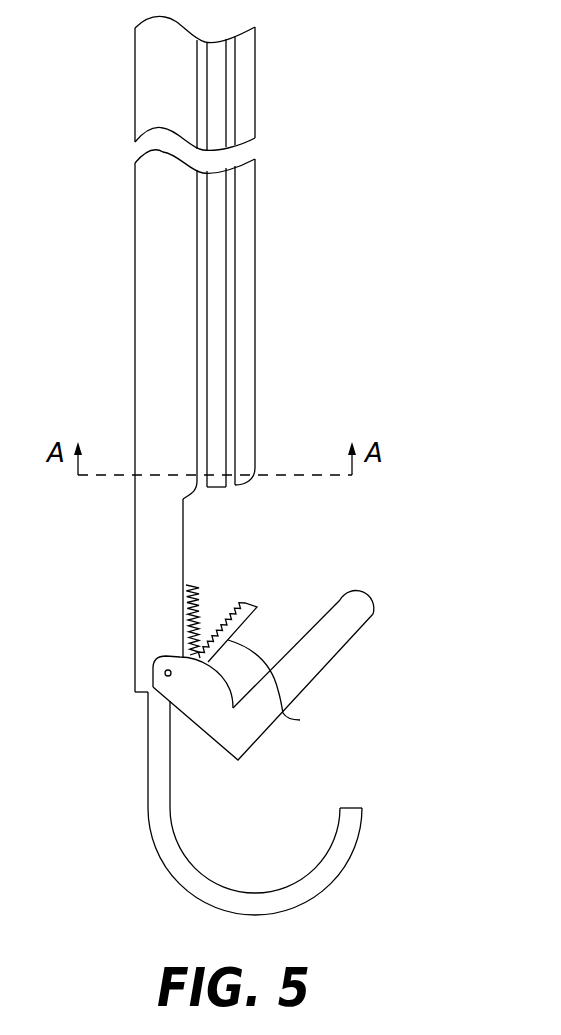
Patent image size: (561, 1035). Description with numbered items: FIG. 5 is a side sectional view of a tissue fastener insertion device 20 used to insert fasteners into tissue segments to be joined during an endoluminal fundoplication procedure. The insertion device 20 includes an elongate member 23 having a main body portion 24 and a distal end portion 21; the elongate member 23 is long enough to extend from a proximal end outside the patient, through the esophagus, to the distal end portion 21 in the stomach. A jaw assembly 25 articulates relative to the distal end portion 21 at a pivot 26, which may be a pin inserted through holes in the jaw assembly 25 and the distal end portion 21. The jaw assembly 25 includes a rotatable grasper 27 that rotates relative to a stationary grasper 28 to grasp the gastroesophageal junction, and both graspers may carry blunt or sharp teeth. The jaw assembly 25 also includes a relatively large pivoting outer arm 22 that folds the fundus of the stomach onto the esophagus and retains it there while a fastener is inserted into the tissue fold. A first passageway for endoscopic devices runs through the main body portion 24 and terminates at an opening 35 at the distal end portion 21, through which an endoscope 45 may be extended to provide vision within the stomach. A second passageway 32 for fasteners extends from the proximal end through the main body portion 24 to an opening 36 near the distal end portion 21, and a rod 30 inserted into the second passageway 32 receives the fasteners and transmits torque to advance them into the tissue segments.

The tissue fastener insertion device 20 is at (444, 224).
The distal end portion 21 is at (147, 571).
The pivoting outer arm 22 is at (343, 622).
The elongate member 23 is at (116, 254).
The main body portion 24 is at (247, 243).
The jaw assembly 25 is at (372, 567).
The pivot 26 is at (165, 673).
The rotatable grasper 27 is at (281, 687).
The stationary grasper 28 is at (185, 585).
The rod 30 is at (216, 342).
The second passageway 32 is at (228, 398).
The opening 35 is at (140, 703).
The opening 36 is at (230, 487).
The endoscope 45 is at (343, 840).